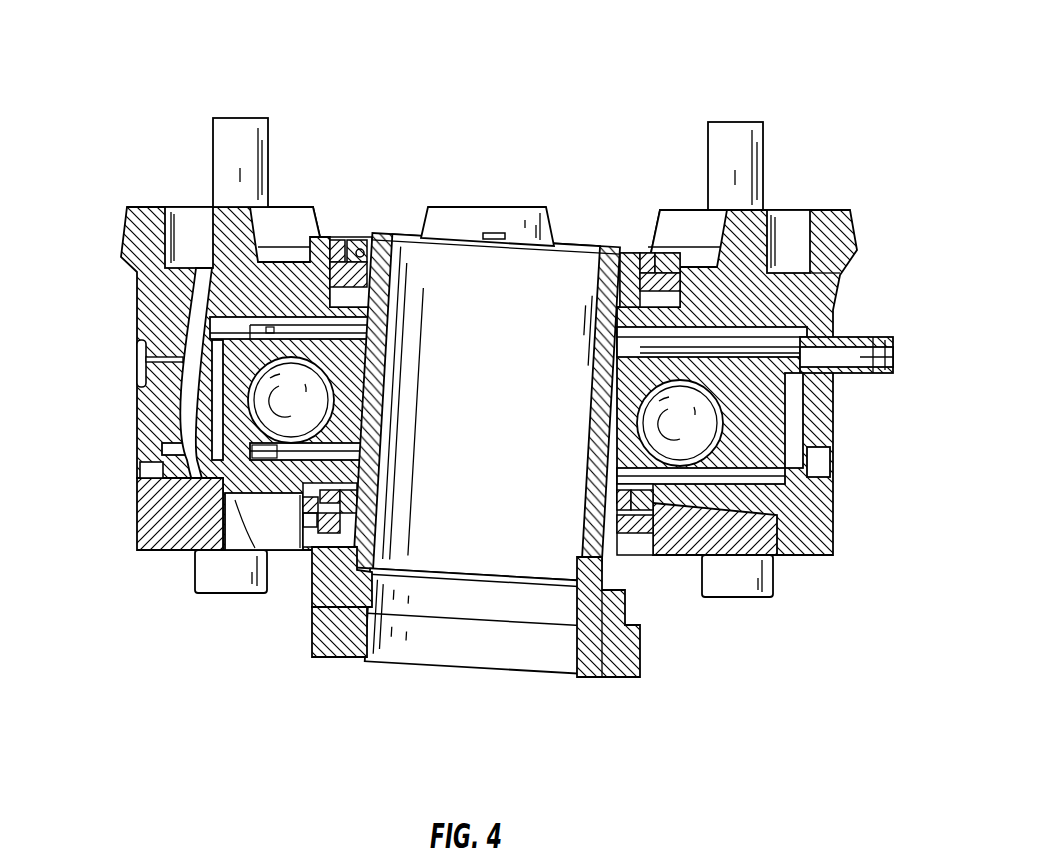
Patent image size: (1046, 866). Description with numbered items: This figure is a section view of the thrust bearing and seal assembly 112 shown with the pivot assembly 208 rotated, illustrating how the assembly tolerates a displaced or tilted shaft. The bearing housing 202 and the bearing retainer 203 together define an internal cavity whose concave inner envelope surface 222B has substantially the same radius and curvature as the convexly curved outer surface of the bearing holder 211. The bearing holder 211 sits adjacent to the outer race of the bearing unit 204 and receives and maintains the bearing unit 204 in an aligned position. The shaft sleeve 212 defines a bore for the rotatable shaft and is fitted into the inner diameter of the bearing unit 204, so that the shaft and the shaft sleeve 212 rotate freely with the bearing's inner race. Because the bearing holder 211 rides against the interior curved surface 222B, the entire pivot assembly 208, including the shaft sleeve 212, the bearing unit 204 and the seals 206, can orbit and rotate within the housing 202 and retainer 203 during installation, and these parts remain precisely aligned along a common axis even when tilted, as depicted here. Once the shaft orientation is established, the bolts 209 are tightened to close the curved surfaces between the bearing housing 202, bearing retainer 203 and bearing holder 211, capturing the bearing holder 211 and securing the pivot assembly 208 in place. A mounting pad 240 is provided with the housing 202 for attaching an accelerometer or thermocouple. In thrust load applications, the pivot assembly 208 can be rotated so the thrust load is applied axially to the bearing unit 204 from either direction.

The thrust bearing and seal assembly 112 is at (604, 113).
The bearing housing 202 is at (137, 328).
The bearing retainer 203 is at (162, 533).
The bearing unit 204 is at (283, 420).
The seals 206 is at (640, 258).
The pivot assembly 208 is at (471, 537).
The bolts 209 is at (750, 585).
The bearing holder 211 is at (226, 470).
The shaft sleeve 212 is at (330, 588).
The concave inner envelope surface 222B is at (147, 508).
The accelerometer and/or thermocouple mounting pad 240 is at (137, 362).